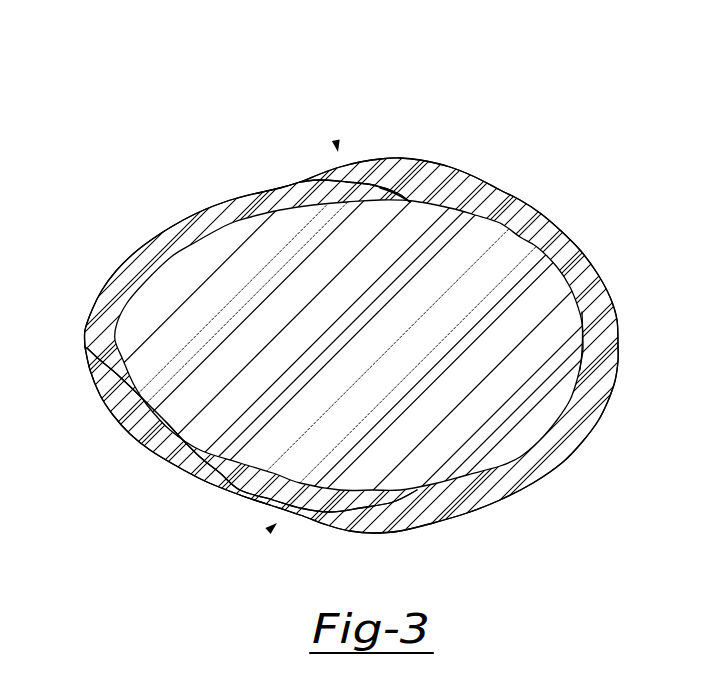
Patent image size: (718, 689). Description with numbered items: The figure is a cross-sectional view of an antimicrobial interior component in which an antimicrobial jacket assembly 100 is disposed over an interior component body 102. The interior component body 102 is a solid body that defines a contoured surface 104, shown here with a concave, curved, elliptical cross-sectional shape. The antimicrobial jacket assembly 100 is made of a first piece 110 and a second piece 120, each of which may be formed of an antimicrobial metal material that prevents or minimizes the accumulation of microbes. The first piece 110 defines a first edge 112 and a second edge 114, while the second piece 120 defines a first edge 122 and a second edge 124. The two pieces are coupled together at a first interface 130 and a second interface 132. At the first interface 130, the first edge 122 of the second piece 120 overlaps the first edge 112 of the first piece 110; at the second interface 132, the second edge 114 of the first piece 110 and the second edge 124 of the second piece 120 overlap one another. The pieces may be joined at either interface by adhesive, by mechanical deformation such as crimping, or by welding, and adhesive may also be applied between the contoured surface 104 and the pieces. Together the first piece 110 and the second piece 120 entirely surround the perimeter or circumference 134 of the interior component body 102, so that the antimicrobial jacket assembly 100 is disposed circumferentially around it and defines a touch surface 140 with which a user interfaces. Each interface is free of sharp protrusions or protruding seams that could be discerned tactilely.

The antimicrobial jacket assembly 100 is at (203, 165).
The interior component body 102 is at (503, 268).
The contoured surface 104 is at (582, 312).
The first piece 110 is at (112, 283).
The first edge of the first piece 112 is at (408, 202).
The second edge of the first piece 114 is at (400, 491).
The second piece 120 is at (458, 193).
The first edge of the second piece 122 is at (300, 182).
The second edge of the second piece 124 is at (268, 502).
The first interface 130 is at (338, 150).
The second interface 132 is at (275, 525).
The perimeter or circumference 134 is at (422, 203).
The touch surface 140 is at (593, 267).